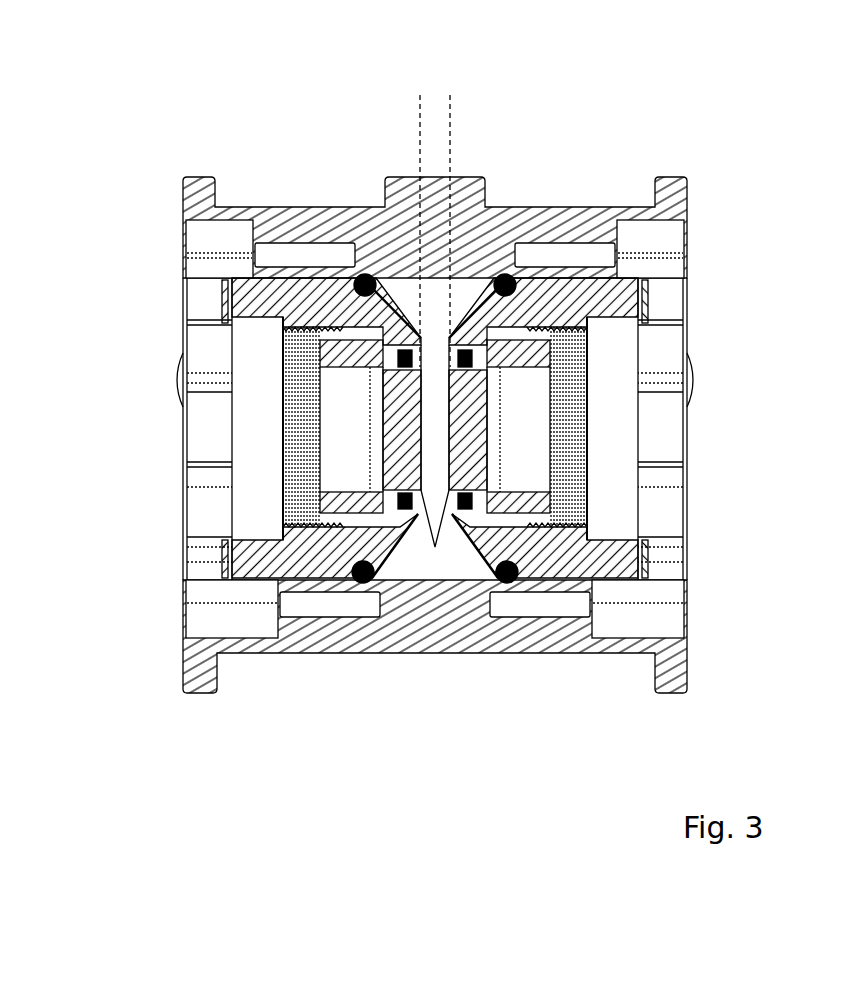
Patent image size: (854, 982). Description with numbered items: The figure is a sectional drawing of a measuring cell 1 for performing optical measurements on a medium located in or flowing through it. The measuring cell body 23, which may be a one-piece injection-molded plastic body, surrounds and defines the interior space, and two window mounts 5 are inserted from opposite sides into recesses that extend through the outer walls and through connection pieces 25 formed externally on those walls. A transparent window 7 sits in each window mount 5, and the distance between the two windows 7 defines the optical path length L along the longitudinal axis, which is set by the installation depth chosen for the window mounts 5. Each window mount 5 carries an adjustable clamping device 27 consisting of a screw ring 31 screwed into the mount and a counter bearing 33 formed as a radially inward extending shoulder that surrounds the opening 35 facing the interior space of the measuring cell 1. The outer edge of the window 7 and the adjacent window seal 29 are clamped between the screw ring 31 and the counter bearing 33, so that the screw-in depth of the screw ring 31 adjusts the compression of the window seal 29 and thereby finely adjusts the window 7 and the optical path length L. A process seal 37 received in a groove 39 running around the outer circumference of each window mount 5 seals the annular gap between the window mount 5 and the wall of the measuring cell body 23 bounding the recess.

The measuring cell 1 is at (192, 126).
The window mount 5 is at (296, 303).
The transparent window 7 is at (400, 446).
The measuring cell body 23 is at (442, 617).
The connection piece 25 is at (302, 633).
The clamping device 27 is at (388, 123).
The window seal 29 is at (300, 384).
The screw ring 31 is at (345, 345).
The counter bearing 33 is at (405, 348).
The opening 35 is at (437, 536).
The process seal 37 is at (354, 583).
The groove 39 is at (352, 575).
The optical path length L is at (434, 85).